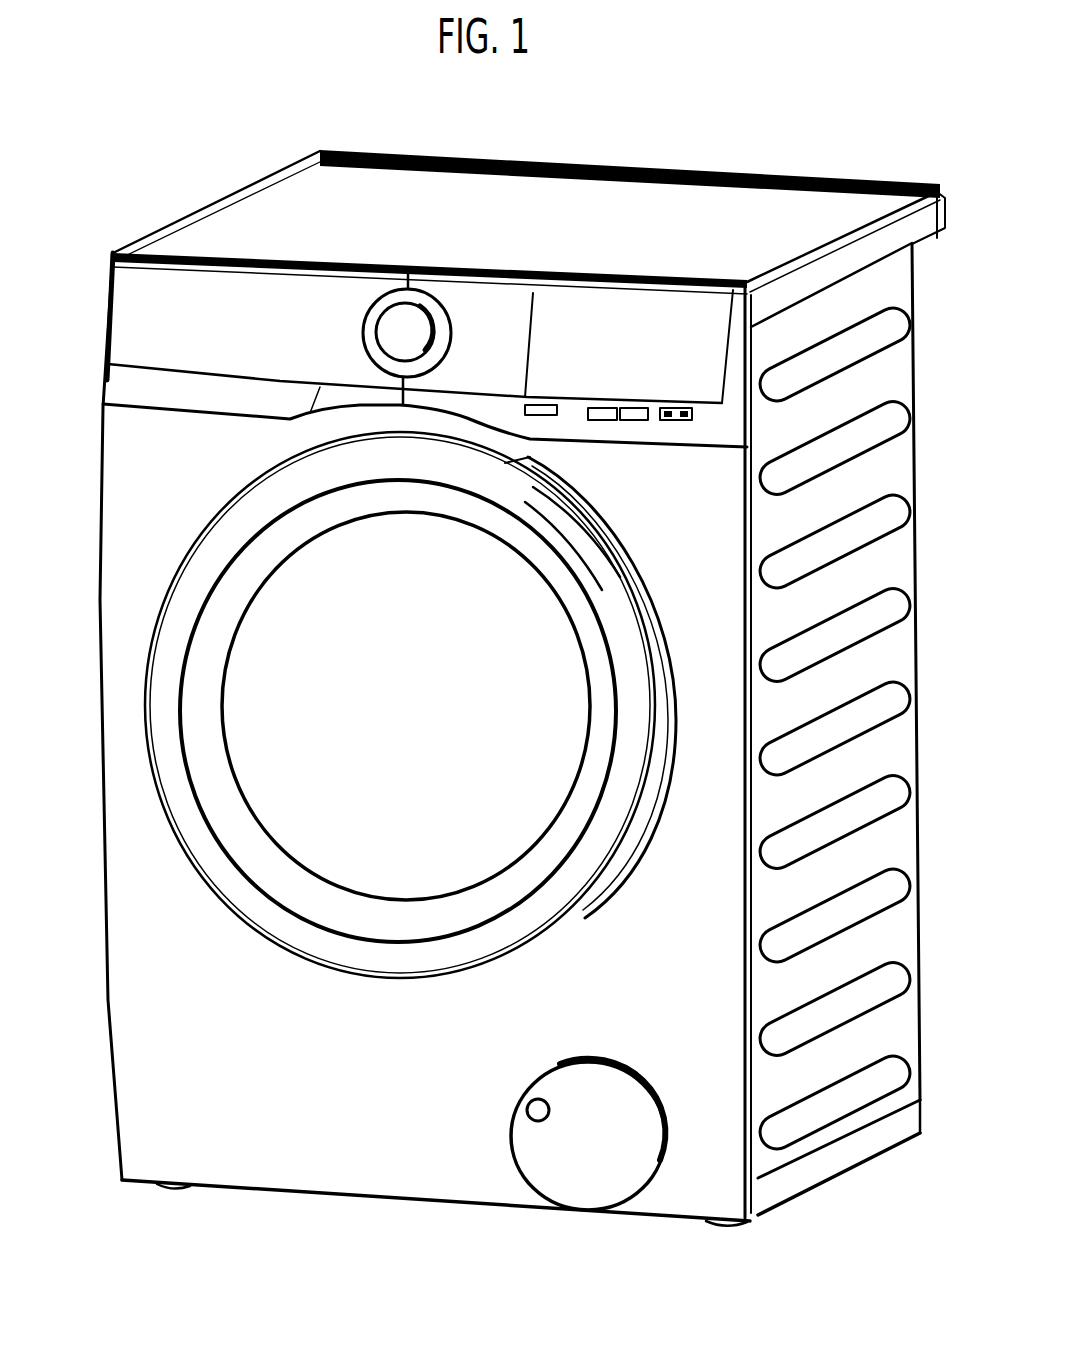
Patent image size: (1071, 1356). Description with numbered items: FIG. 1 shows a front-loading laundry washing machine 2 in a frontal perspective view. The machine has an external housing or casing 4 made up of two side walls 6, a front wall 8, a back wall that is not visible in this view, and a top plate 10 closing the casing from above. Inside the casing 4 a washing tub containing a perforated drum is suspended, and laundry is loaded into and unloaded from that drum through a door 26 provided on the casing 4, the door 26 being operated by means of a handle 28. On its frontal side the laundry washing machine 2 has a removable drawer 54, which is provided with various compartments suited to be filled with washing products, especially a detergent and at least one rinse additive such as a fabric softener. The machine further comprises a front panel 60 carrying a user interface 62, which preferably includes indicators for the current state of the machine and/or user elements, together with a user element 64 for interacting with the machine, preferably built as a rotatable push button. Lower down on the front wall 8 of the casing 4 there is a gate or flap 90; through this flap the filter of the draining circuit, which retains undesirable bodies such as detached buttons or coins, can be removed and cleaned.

The laundry washing machine 2 is at (748, 153).
The external housing or casing 4 is at (866, 562).
The side walls 6 is at (98, 583).
The front wall 8 is at (703, 1003).
The top plate 10 is at (512, 222).
The door 26 is at (412, 958).
The handle 28 is at (612, 598).
The removable drawer 54 is at (200, 320).
The front panel 60 is at (580, 340).
The user interface 62 is at (666, 343).
The user element 64 is at (398, 333).
The gate or flap 90 is at (590, 1163).